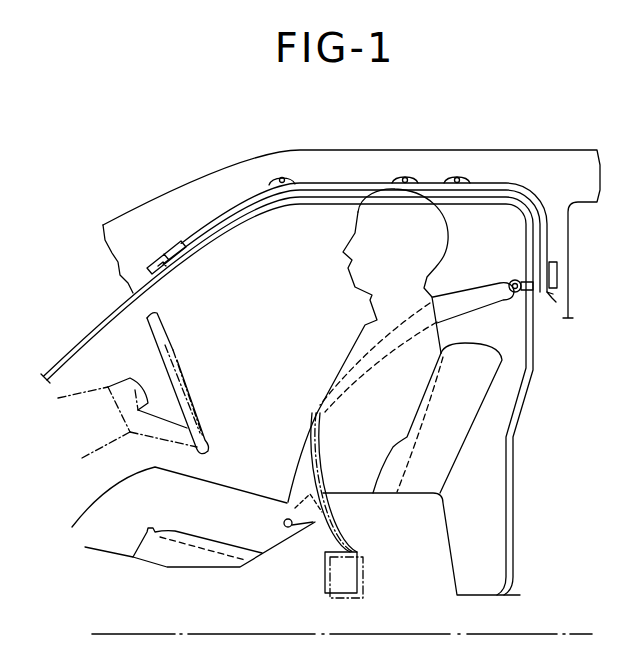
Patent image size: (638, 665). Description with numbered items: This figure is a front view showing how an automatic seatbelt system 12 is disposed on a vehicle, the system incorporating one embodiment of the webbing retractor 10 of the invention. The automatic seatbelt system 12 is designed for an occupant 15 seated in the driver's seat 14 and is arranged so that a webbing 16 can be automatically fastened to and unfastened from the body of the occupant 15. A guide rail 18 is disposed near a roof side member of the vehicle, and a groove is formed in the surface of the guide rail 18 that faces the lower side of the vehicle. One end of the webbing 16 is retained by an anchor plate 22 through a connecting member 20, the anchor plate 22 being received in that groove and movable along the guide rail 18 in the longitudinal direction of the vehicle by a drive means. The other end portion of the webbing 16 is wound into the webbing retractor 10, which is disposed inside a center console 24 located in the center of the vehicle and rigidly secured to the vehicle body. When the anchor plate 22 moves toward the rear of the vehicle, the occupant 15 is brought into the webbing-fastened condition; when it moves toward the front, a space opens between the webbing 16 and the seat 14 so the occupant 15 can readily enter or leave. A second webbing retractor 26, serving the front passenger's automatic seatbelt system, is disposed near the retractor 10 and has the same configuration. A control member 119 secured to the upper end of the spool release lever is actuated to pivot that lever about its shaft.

The webbing retractor 10 is at (358, 552).
The automatic seatbelt system 12 is at (431, 176).
The seat 14 is at (467, 440).
The occupant 15 is at (380, 298).
The webbing 16 is at (477, 303).
The guide rail 18 is at (325, 180).
The connecting member 20 is at (508, 283).
The anchor plate 22 is at (522, 282).
The center console 24 is at (447, 532).
The webbing retractor 26 is at (365, 590).
The control member 119 is at (284, 523).